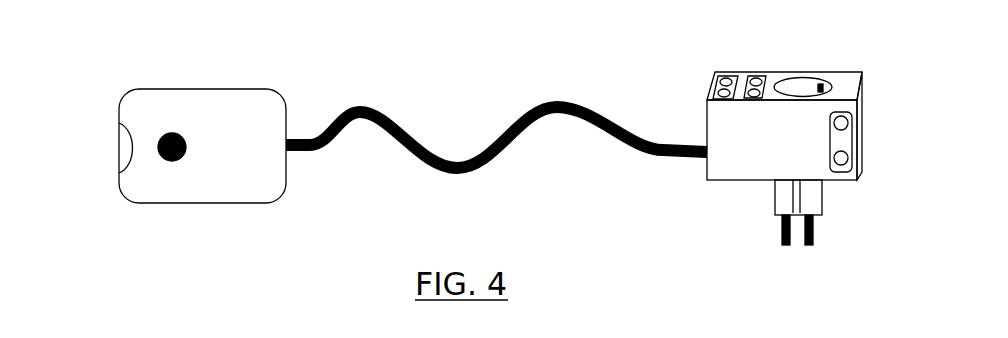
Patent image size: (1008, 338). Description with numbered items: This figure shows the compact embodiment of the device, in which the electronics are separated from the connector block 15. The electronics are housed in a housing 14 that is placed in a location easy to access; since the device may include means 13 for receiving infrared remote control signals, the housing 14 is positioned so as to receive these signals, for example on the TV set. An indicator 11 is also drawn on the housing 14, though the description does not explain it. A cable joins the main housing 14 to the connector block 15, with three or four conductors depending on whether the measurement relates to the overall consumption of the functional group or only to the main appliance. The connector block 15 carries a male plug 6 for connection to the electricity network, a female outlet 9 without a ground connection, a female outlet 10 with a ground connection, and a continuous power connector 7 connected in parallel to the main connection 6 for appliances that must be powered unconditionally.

The male plug 6 is at (775, 198).
The continuous power connector 7 is at (840, 172).
The female outlet without ground connection 9 is at (757, 72).
The female outlet with ground connection 10 is at (797, 90).
The indicator 11 is at (175, 137).
The means for receiving infrared remote control signals 13 is at (120, 147).
The housing 14 is at (287, 113).
The connector block 15 is at (705, 125).